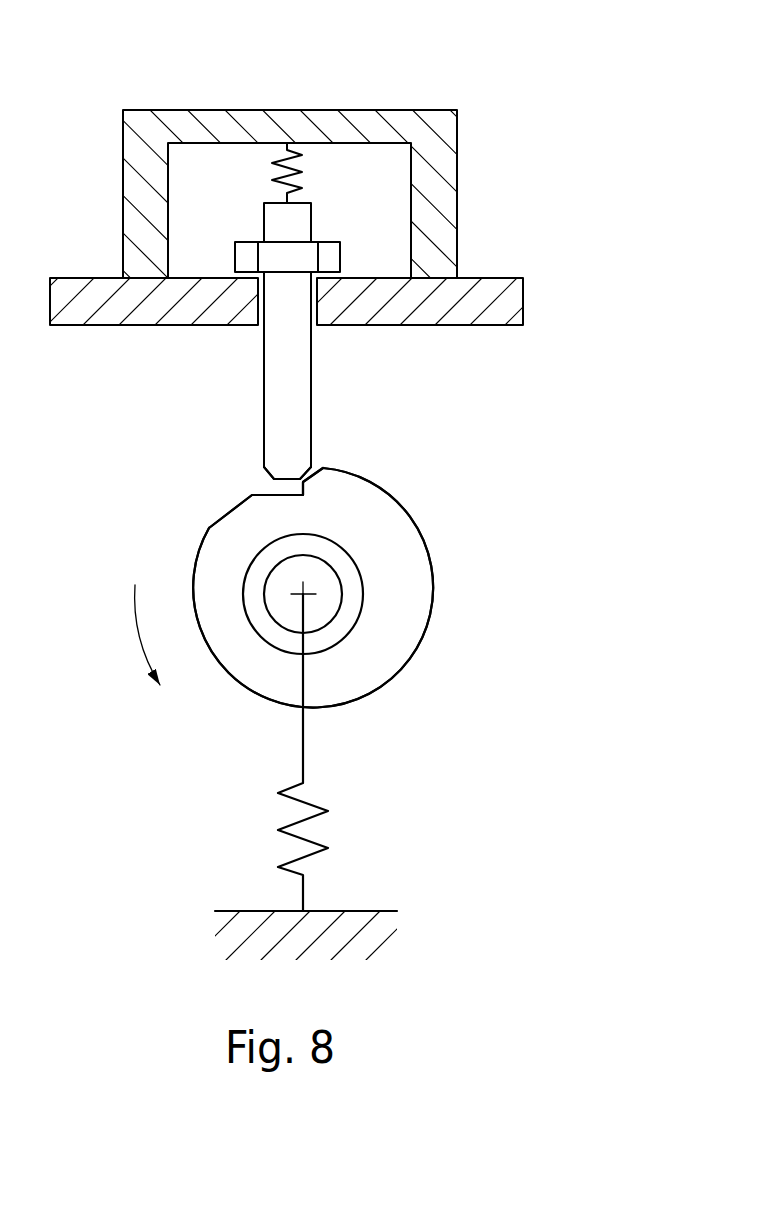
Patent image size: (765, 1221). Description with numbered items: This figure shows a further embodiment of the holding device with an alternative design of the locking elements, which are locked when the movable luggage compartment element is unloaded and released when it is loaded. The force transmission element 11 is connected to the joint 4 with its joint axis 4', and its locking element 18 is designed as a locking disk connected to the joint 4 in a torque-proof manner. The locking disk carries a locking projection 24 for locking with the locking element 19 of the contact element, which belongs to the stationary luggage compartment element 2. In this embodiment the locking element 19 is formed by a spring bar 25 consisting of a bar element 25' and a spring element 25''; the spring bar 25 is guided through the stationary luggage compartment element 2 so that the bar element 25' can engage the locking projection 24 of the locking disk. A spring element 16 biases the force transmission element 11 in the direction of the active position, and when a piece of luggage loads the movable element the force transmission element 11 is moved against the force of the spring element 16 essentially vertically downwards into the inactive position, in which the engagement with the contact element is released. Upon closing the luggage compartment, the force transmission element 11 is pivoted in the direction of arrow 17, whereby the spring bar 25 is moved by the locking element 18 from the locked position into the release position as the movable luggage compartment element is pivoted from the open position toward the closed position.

The stationary luggage compartment element 2 is at (432, 197).
The spring element 25'' is at (337, 109).
The locking element 19 is at (320, 395).
The bar element 25' is at (245, 369).
The spring bar 25 is at (213, 481).
The locking projection 24 is at (320, 468).
The locking element 18 is at (350, 470).
The force transmission element 11 is at (400, 597).
The joint 4 is at (388, 574).
The joint axis 4' is at (371, 659).
The arrow 17 is at (135, 622).
The spring element 16 is at (307, 822).